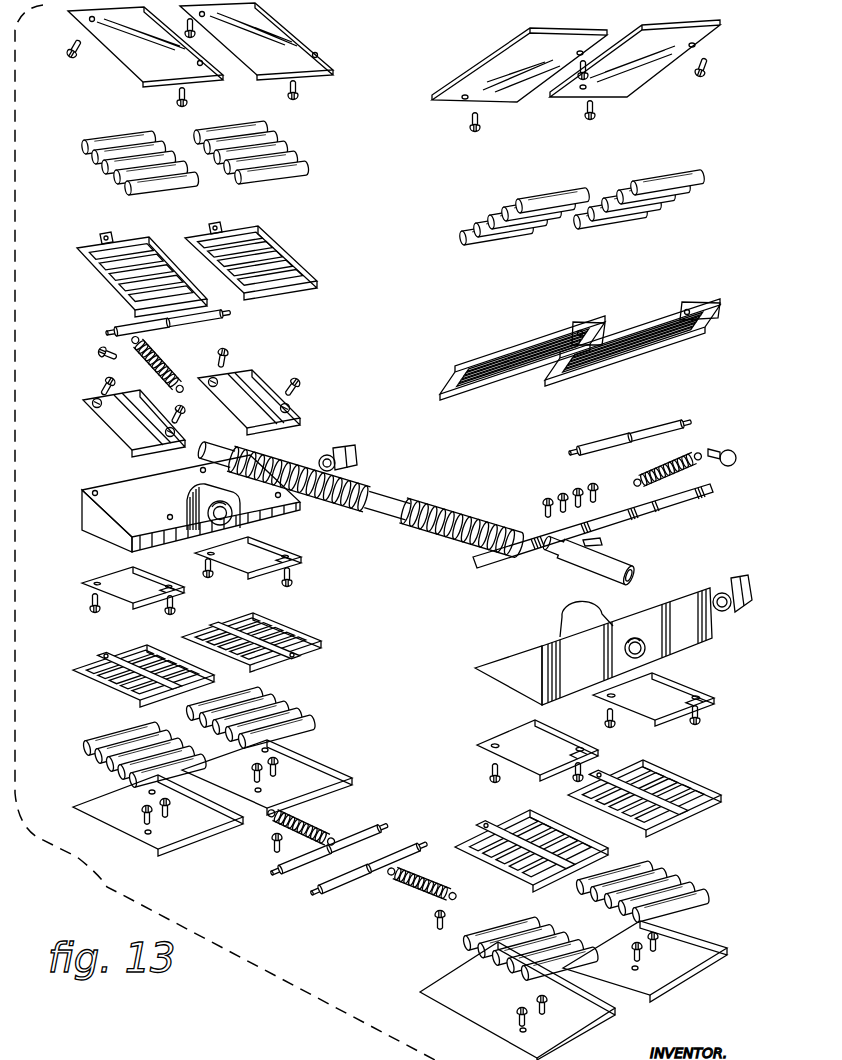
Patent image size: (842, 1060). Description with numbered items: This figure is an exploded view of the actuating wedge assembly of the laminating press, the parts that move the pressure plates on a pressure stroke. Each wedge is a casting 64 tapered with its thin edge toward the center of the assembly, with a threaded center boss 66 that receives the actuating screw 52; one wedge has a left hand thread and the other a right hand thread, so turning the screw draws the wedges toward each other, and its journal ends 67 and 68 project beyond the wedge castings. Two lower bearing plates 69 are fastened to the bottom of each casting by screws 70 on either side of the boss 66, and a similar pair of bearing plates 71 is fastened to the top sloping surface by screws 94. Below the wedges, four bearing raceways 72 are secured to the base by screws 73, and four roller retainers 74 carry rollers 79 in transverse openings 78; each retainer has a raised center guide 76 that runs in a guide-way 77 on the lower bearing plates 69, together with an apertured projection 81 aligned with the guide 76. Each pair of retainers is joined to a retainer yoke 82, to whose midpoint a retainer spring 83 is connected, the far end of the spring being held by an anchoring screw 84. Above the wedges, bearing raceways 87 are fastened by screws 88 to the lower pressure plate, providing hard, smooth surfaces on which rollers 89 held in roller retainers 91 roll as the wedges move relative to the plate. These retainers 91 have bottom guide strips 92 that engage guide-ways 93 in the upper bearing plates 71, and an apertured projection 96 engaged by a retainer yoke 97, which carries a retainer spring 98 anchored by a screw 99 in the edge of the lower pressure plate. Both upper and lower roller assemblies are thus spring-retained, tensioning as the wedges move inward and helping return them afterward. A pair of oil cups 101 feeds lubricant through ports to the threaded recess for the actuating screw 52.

The actuating screw 52 is at (388, 492).
The casting 64 is at (92, 530).
The center boss 66 is at (233, 502).
The journal end 67 is at (208, 447).
The journal end 68 is at (631, 566).
The lower bearing plate 69 is at (133, 604).
The screw 70 is at (295, 583).
The bearing plate 71 is at (110, 438).
The bearing raceway 72 is at (320, 763).
The screw 73 is at (660, 933).
The roller retainer 74 is at (320, 633).
The raised center guide 76 is at (113, 652).
The guide-way 77 is at (165, 611).
The transverse opening 78 is at (77, 680).
The roller 79 is at (300, 707).
The apertured projection 81 is at (310, 660).
The retainer yoke 82 is at (295, 868).
The retainer spring 83 is at (325, 832).
The anchoring screw 84 is at (273, 840).
The bearing raceway 87 is at (147, 80).
The screw 88 is at (76, 62).
The roller 89 is at (310, 174).
The roller retainer 91 is at (307, 293).
The bottom guide strip 92 is at (287, 293).
The guide-way 93 is at (300, 418).
The screw 94 is at (104, 377).
The apertured projection 96 is at (100, 234).
The retainer yoke 97 is at (201, 322).
The retainer spring 98 is at (662, 470).
The anchoring screw 99 is at (574, 322).
The oil cup 101 is at (355, 455).